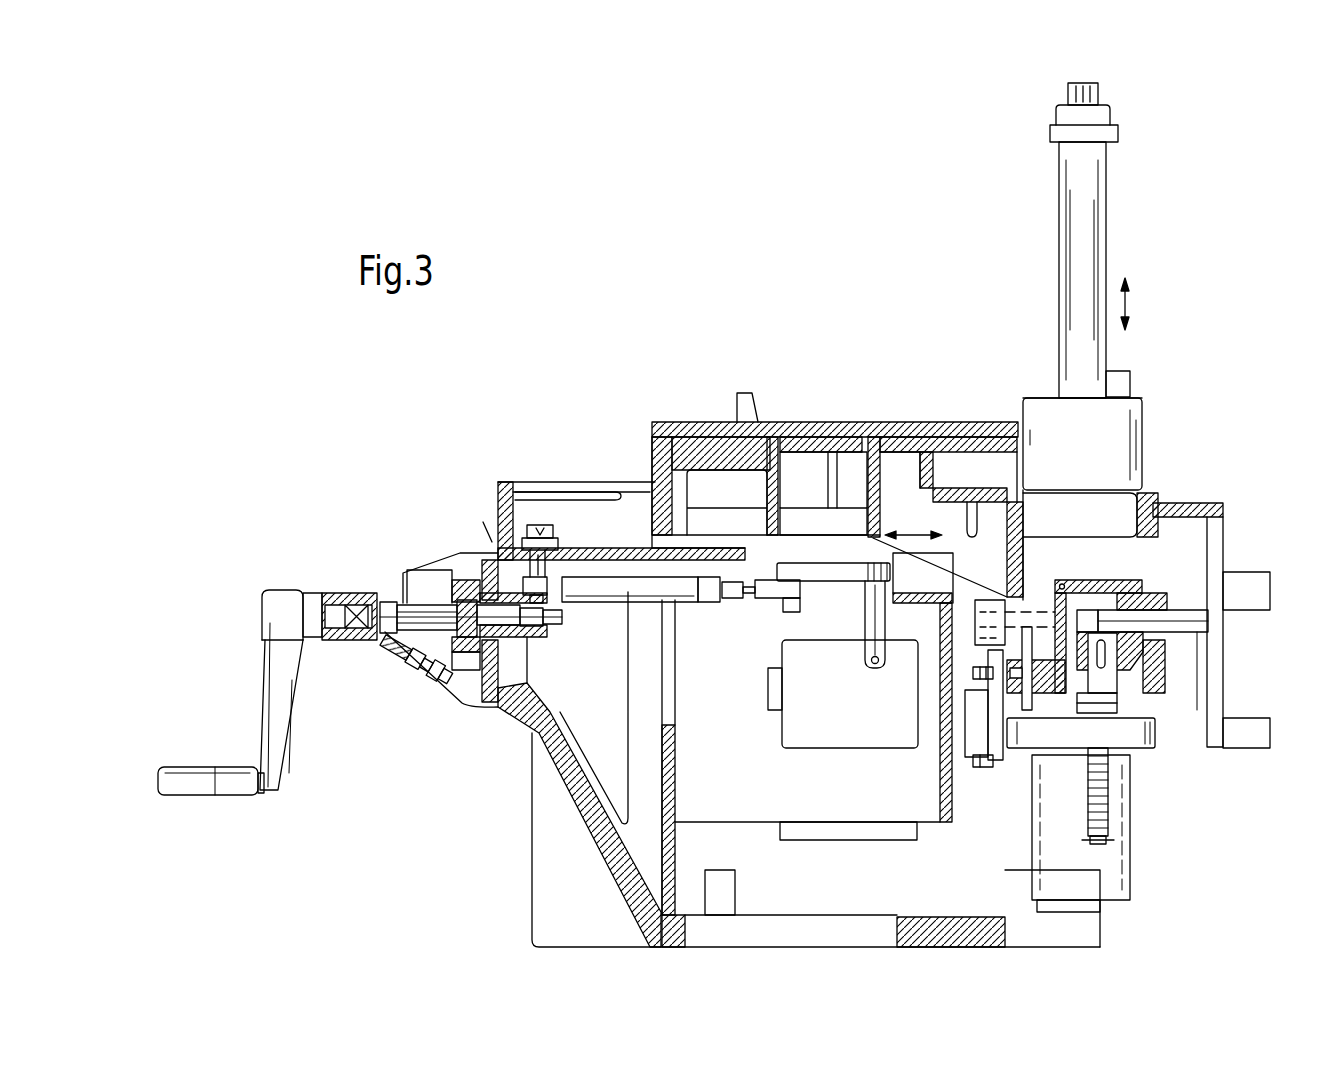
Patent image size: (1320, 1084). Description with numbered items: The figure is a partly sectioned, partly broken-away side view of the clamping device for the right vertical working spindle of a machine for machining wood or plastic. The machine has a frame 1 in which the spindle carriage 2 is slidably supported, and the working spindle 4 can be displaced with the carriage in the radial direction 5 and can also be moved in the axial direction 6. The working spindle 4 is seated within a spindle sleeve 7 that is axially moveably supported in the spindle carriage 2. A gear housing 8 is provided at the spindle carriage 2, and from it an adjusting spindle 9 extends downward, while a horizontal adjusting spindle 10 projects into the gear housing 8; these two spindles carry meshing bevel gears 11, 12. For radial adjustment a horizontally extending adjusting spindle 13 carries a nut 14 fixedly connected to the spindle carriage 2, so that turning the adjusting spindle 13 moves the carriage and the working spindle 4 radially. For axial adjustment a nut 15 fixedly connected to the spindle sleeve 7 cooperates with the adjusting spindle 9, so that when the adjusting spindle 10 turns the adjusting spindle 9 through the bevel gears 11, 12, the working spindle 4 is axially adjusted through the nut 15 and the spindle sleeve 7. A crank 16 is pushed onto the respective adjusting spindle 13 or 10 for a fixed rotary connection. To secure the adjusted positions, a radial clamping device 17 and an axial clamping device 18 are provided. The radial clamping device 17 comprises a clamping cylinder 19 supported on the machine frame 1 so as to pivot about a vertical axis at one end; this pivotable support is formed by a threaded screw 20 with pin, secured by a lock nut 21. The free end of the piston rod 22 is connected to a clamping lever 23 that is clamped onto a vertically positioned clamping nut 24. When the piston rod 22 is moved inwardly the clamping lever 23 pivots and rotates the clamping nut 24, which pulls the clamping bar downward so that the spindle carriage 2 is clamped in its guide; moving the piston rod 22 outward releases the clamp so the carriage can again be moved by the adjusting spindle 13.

The machine frame 1 is at (690, 437).
The spindle carriage 2 is at (907, 515).
The working spindle 4 is at (1090, 250).
The radial direction 5 is at (912, 517).
The axial direction 6 is at (1128, 305).
The spindle sleeve 7 is at (1115, 440).
The gear housing 8 is at (1122, 597).
The adjusting spindle 9 is at (1108, 785).
The horizontal adjusting spindle 10 is at (1170, 620).
The bevel gear 11 is at (1137, 660).
The bevel gear 12 is at (1140, 607).
The adjusting spindle 13 is at (503, 482).
The nut 14 is at (991, 600).
The nut 15 is at (1120, 738).
The crank 16 is at (278, 672).
The radial clamping device 17 is at (613, 612).
The axial clamping device 18 is at (990, 783).
The clamping cylinder 19 is at (593, 592).
The threaded screw 20 is at (548, 538).
The lock nut 21 is at (447, 677).
The piston rod 22 is at (748, 593).
The clamping lever 23 is at (783, 573).
The clamping nut 24 is at (867, 660).